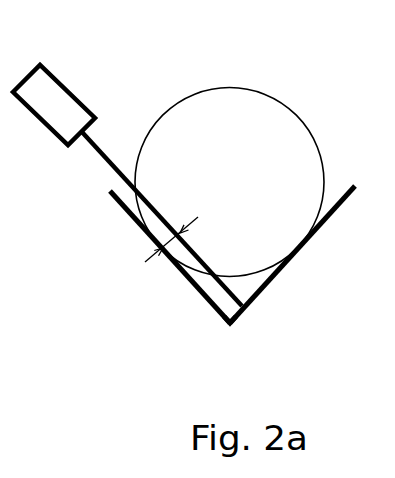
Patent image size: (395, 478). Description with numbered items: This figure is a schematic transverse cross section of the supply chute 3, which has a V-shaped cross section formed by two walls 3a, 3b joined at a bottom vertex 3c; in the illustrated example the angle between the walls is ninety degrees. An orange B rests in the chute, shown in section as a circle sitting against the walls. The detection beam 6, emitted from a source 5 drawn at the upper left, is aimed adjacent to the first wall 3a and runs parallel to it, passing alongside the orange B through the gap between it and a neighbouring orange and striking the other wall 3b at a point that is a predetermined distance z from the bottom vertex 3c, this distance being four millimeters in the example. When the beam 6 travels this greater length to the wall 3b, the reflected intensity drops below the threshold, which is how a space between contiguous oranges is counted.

The drive / actuator 5 is at (57, 97).
The detection beam 6 is at (97, 154).
The orange B is at (229, 182).
The supply chute 3 is at (216, 279).
The first wall 3a is at (198, 297).
The second wall 3b is at (267, 287).
The bottom vertex 3c is at (233, 327).
The distance z is at (171, 252).